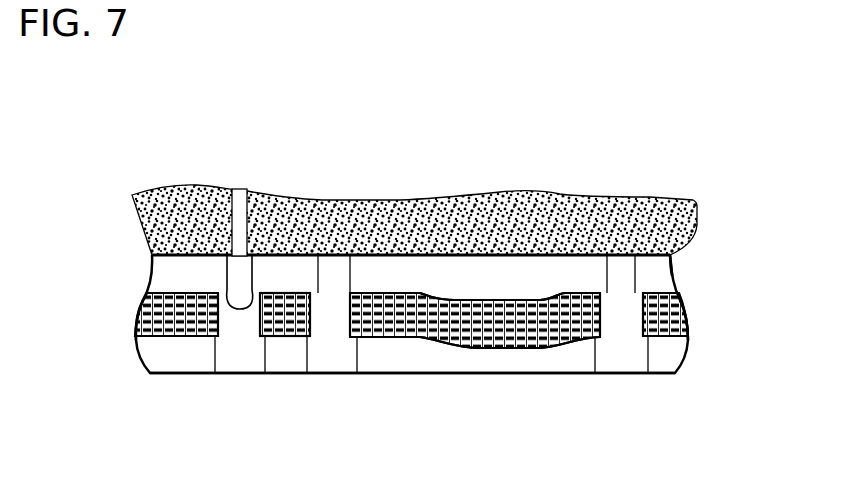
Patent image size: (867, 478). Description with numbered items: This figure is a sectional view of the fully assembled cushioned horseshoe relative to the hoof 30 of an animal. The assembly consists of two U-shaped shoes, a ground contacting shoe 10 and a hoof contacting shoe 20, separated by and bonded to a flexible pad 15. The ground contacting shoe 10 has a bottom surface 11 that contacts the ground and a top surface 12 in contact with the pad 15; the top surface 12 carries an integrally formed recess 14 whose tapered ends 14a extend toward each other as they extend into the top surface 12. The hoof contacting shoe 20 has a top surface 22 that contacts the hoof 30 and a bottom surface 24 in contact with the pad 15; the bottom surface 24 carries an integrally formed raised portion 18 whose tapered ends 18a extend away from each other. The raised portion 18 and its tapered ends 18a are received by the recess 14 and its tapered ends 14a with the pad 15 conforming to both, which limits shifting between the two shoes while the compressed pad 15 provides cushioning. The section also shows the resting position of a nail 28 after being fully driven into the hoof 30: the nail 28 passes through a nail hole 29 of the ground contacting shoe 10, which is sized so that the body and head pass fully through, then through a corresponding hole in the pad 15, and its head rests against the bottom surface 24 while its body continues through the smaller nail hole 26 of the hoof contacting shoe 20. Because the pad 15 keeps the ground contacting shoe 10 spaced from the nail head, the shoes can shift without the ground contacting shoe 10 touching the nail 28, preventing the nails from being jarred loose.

The ground contacting shoe 10 is at (152, 357).
The bottom surface 11 is at (395, 377).
The top surface 12 is at (690, 320).
The recess 14 is at (512, 340).
The tapered ends 14a is at (425, 337).
The pad 15 is at (142, 312).
The raised portion 18 is at (512, 297).
The tapered ends 18a is at (425, 296).
The hoof contacting shoe 20 is at (173, 272).
The top surface 22 is at (415, 199).
The bottom surface 24 is at (672, 288).
The nail holes 26 is at (158, 199).
The nail 28 is at (237, 188).
The nail holes 29 is at (307, 343).
The hoof 30 is at (588, 220).